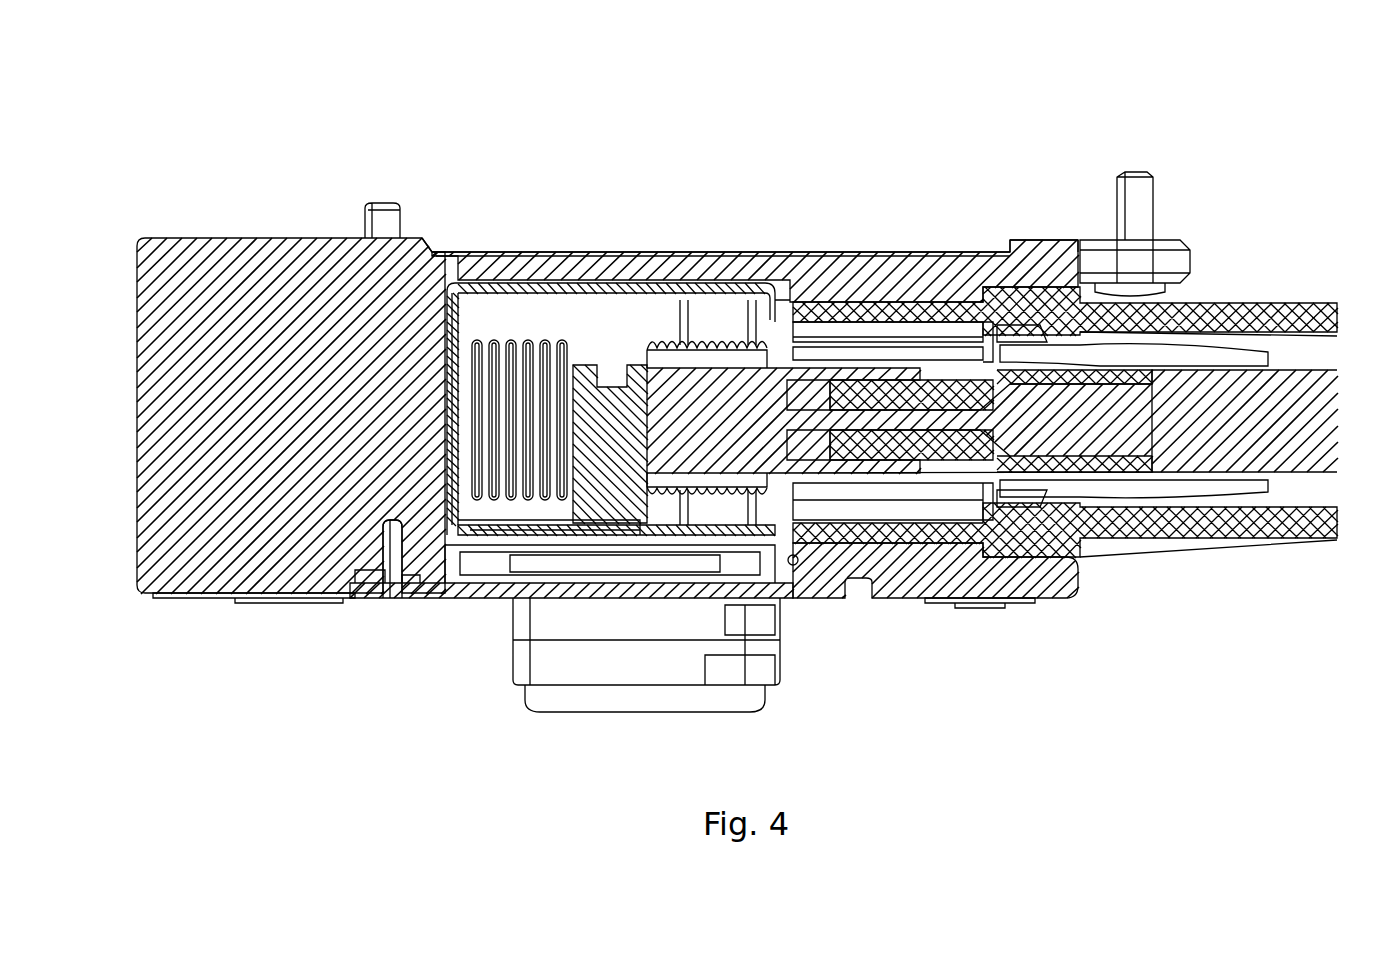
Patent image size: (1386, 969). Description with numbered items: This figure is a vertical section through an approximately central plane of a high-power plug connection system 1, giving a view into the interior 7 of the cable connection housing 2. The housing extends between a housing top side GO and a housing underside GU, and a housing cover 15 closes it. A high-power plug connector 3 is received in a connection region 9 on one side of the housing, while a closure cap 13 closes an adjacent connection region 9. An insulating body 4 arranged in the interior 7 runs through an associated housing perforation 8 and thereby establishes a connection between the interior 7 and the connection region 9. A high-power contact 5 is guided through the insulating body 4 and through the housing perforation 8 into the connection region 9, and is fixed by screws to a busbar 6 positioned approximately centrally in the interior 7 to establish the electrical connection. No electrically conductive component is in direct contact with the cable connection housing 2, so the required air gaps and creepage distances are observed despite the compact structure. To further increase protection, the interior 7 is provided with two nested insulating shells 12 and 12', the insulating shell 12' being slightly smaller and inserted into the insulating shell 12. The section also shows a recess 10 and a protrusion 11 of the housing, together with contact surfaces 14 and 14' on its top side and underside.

The high-power plug connection system 1 is at (1150, 115).
The cable connection housing 2 is at (272, 420).
The high-power plug connector 3 is at (1235, 538).
The insulating body 4 is at (722, 345).
The high-power contact 5 is at (724, 425).
The busbar 6 is at (620, 475).
The interior 7 is at (604, 333).
The housing perforation 8 is at (475, 310).
The connection region 9 is at (1098, 568).
The recess 10 is at (348, 228).
The protrusion 11 is at (1178, 258).
The insulating shell 12 is at (618, 346).
The insulating shell 12' is at (537, 633).
The closure cap 13 is at (608, 712).
The contact surface 14 is at (747, 184).
The contact surface 14' is at (266, 623).
The housing cover 15 is at (835, 580).
The housing top side GO is at (702, 192).
The housing underside GU is at (342, 635).